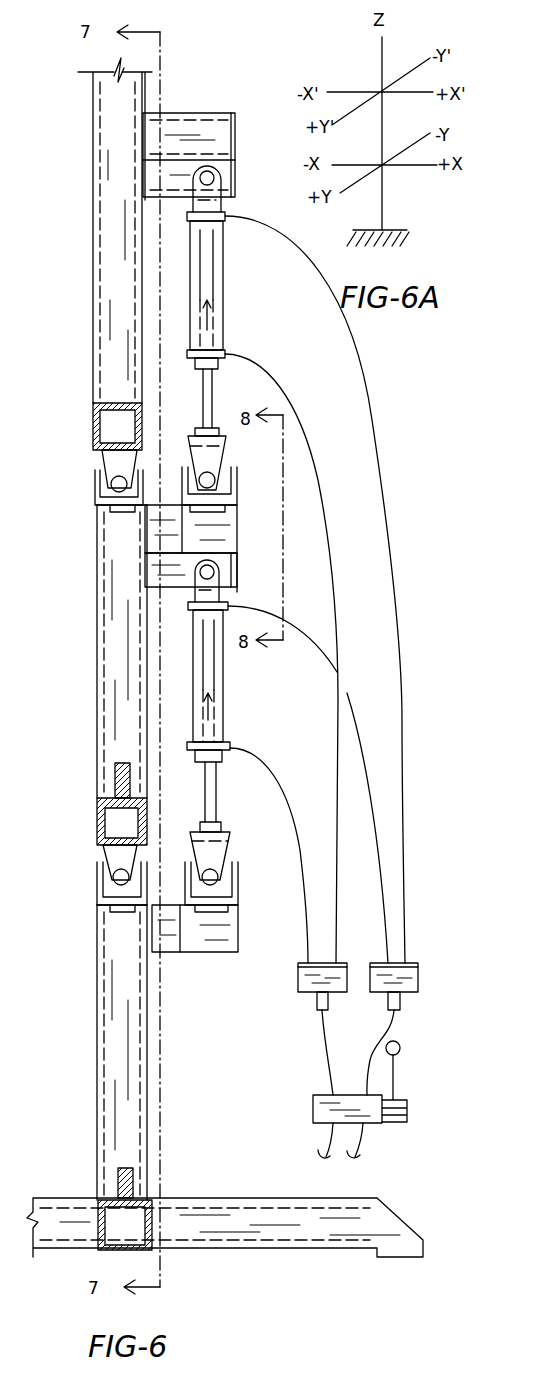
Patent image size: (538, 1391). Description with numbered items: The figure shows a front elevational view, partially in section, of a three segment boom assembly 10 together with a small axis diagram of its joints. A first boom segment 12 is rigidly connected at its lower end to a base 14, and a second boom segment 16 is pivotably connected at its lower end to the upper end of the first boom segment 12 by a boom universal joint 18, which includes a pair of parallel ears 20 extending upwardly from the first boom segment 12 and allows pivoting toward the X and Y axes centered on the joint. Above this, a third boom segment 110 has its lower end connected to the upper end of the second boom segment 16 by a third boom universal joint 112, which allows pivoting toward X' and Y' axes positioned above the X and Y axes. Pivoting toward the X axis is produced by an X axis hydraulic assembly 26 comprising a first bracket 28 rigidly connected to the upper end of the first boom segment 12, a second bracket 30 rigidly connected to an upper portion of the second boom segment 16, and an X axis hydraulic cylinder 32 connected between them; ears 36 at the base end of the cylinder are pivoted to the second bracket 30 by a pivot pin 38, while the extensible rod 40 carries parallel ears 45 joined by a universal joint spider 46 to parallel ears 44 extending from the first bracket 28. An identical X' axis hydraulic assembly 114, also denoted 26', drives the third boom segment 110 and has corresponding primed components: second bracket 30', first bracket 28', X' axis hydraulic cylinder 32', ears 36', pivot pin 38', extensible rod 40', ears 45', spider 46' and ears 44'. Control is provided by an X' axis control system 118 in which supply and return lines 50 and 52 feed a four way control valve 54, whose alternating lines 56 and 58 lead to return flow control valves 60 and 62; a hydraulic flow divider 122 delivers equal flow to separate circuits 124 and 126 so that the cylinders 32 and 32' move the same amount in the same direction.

In FIG. 6A, the boom assembly 10 is at (333, 70).
In FIG. 6, the first boom segment 12 is at (97, 1095).
In FIG. 6A, the first boom segment 12 is at (385, 222).
In FIG. 6, the base 14 is at (292, 1197).
In FIG. 6, the second boom segment 16 is at (97, 682).
In FIG. 6A, the second boom segment 16 is at (385, 125).
In FIG. 6, the boom universal joint 18 is at (97, 873).
In FIG. 6A, the boom universal joint 18 is at (384, 168).
In FIG. 6, the parallel ears 20 is at (138, 893).
In FIG. 6, the X axis hydraulic assembly 26 is at (293, 658).
In FIG. 6, the X axis hydraulic assembly 26' is at (315, 507).
In FIG. 6, the first bracket 28 is at (195, 947).
In FIG. 6, the first bracket 28' is at (214, 529).
In FIG. 6, the second bracket 30 is at (191, 599).
In FIG. 6, the second bracket 30' is at (216, 155).
In FIG. 6, the X axis hydraulic cylinder 32 is at (233, 686).
In FIG. 6, the X' axis hydraulic cylinder 32' is at (238, 295).
In FIG. 6, the ears 36 is at (234, 593).
In FIG. 6, the ears 36' is at (238, 206).
In FIG. 6, the pivot pin 38 is at (237, 570).
In FIG. 6, the pivot pin 38' is at (241, 183).
In FIG. 6, the extensible rod 40 is at (233, 792).
In FIG. 6, the extensible rod 40' is at (242, 398).
In FIG. 6, the parallel ears 44 is at (235, 848).
In FIG. 6, the parallel ears 44' is at (236, 459).
In FIG. 6, the parallel ears 45 is at (232, 899).
In FIG. 6, the parallel ears 45' is at (233, 486).
In FIG. 6, the universal joint spider 46 is at (241, 867).
In FIG. 6, the universal joint spider 46' is at (241, 470).
In FIG. 6, the hydraulic supply and return line 50 is at (330, 1140).
In FIG. 6, the hydraulic supply and return line 52 is at (362, 1140).
In FIG. 6, the four way control valve 54 is at (313, 1108).
In FIG. 6, the alternating hydraulic supply and return line 56 is at (325, 1035).
In FIG. 6, the alternating hydraulic supply and return line 58 is at (390, 1025).
In FIG. 6, the return flow control valve 60 is at (404, 1000).
In FIG. 6, the return flow control valve 62 is at (312, 1000).
In FIG. 6, the third boom segment 110 is at (92, 200).
In FIG. 6A, the third boom segment 110 is at (383, 45).
In FIG. 6, the third boom universal joint 112 is at (77, 445).
In FIG. 6A, the third boom universal joint 112 is at (384, 90).
In FIG. 6, the X' axis hydraulic assembly 114 is at (254, 341).
In FIG. 6, the X' axis control system 118 is at (435, 818).
In FIG. 6, the hydraulic flow divider 122 is at (298, 975).
In FIG. 6, the circuit 124 is at (288, 805).
In FIG. 6, the circuit 126 is at (402, 930).